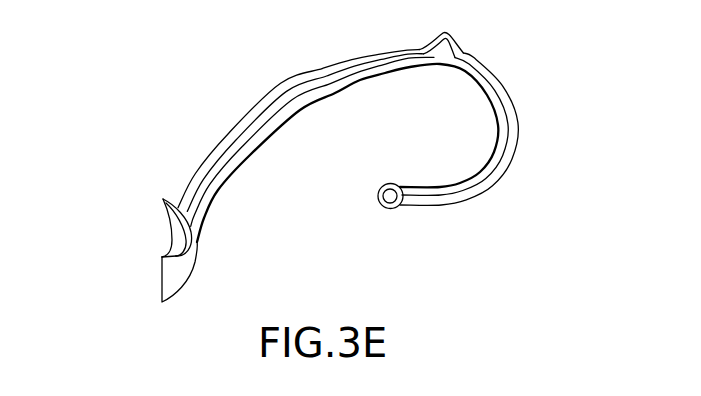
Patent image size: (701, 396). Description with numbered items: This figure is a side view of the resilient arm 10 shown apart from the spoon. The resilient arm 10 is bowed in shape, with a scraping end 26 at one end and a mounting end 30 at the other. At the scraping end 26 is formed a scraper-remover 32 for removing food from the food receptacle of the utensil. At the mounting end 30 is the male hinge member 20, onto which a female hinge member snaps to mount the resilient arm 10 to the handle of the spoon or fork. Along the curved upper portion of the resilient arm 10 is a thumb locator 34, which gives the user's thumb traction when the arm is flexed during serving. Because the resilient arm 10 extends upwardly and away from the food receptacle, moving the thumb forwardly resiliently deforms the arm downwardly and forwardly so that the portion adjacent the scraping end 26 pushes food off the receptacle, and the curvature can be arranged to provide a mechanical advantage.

The resilient arm 10 is at (324, 152).
The male hinge member 20 is at (390, 198).
The scraping end 26 is at (190, 212).
The mounting end 30 is at (378, 195).
The scraper-remover 32 is at (167, 223).
The thumb locator 34 is at (450, 45).